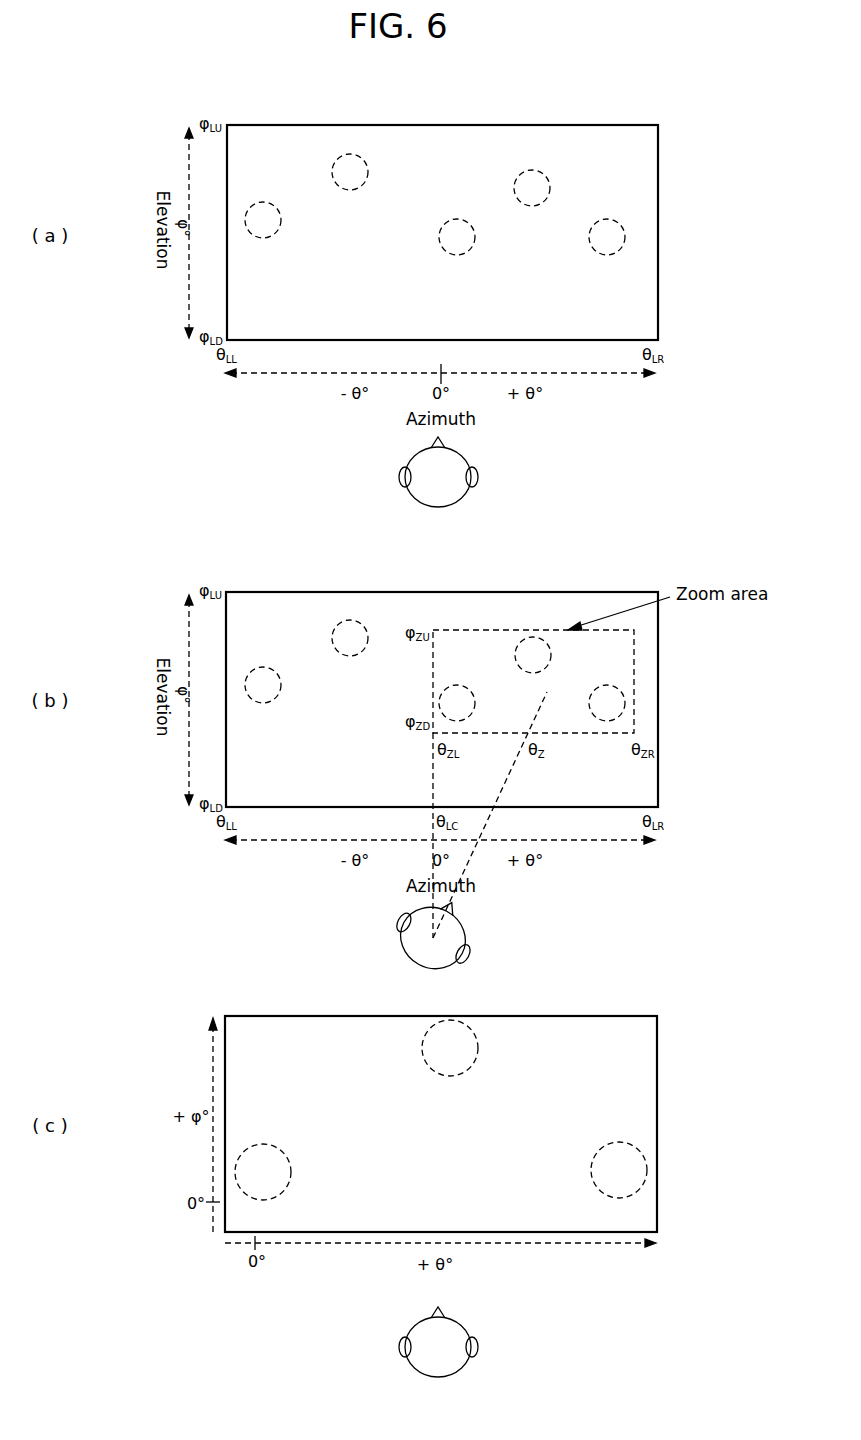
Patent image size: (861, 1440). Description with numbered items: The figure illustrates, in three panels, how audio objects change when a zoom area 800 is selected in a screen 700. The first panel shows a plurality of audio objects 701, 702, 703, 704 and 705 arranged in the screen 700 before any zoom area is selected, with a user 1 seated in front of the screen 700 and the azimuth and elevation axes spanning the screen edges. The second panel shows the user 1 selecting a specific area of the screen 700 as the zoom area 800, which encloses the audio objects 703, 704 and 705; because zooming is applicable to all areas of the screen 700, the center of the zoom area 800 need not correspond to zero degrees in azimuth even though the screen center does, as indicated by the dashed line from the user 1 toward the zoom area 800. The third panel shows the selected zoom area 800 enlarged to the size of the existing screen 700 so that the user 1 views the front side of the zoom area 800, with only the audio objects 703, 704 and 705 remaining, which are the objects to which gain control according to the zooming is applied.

The user 1 is at (470, 457).
The screen 700 is at (583, 125).
The audio object 701 is at (280, 208).
The audio object 702 is at (368, 168).
The audio object 703 is at (475, 242).
The audio object 704 is at (550, 186).
The audio object 705 is at (625, 236).
The zoom area 800 is at (490, 630).